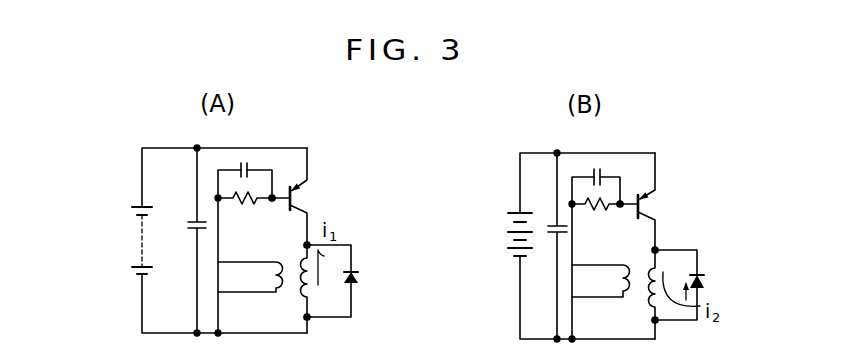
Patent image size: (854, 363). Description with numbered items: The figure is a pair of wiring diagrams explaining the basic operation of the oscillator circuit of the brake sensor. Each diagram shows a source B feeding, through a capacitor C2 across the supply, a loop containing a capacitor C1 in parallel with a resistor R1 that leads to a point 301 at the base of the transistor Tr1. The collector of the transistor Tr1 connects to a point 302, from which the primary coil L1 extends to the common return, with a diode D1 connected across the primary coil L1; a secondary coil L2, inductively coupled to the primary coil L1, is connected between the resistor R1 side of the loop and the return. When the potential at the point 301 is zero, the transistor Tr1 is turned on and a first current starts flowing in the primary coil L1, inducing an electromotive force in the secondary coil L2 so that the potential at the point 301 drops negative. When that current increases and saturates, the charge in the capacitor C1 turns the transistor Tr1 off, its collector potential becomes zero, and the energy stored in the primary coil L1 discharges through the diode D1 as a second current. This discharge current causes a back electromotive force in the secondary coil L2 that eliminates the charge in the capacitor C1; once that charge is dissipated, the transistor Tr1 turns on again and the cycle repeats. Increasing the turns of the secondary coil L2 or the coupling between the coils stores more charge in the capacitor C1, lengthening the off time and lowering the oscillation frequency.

The point 301 is at (273, 195).
The collector connection point of transistor Tr1 302 is at (312, 246).
The battery B is at (137, 243).
The capacitor C1 is at (600, 147).
The capacitor C2 is at (545, 224).
The resistor R1 is at (243, 203).
The transistor Tr1 is at (295, 198).
The primary coil L1 is at (305, 290).
The secondary coil L2 is at (271, 281).
The diode D1 is at (360, 277).